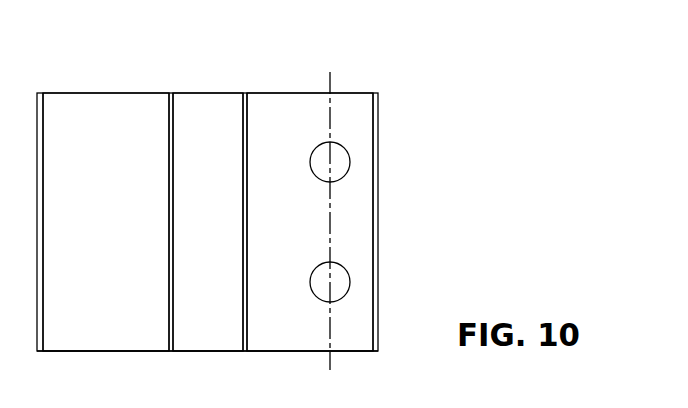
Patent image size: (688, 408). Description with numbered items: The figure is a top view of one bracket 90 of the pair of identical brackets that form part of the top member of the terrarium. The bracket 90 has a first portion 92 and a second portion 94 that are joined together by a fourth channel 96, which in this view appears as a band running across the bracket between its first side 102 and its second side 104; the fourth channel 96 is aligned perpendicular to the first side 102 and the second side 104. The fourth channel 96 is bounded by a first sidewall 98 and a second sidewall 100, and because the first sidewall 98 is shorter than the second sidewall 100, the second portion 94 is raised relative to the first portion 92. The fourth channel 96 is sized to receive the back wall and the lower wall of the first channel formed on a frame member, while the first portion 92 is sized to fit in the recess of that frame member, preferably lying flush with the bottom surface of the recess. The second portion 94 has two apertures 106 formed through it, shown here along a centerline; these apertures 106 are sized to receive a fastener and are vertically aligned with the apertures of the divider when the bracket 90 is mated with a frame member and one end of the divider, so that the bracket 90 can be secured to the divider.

The bracket 90 is at (403, 56).
The first portion 92 is at (118, 236).
The second portion 94 is at (300, 236).
The fourth channel 96 is at (222, 236).
The first sidewall 98 is at (173, 104).
The second sidewall 100 is at (243, 103).
The first side 102 is at (109, 351).
The second side 104 is at (77, 93).
The aperture 106 is at (350, 162).